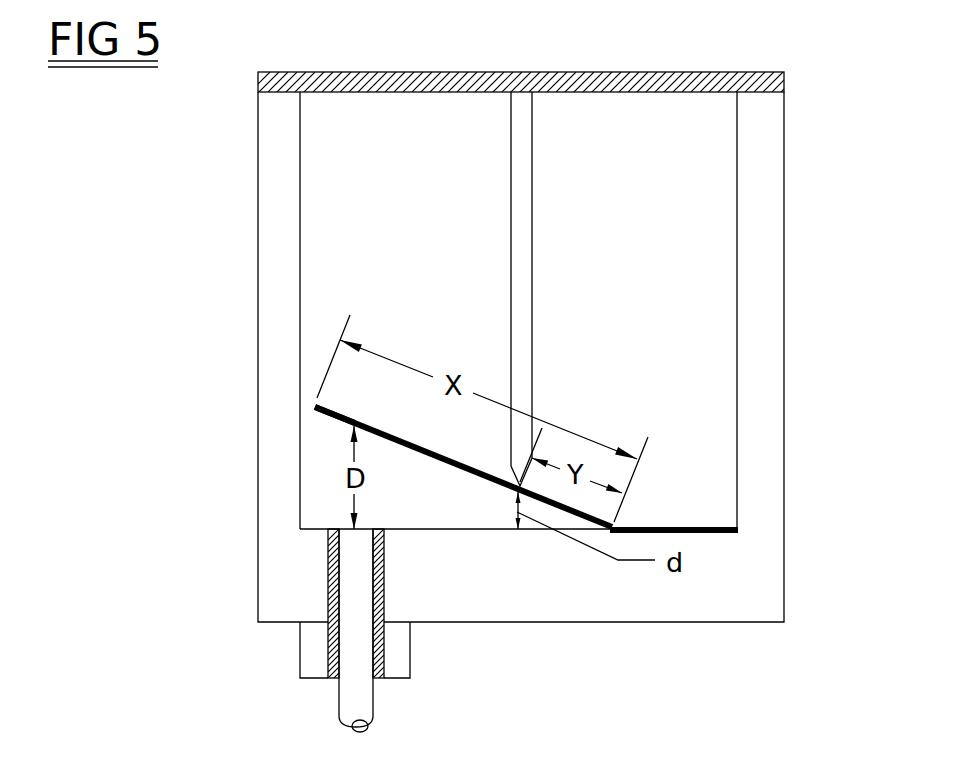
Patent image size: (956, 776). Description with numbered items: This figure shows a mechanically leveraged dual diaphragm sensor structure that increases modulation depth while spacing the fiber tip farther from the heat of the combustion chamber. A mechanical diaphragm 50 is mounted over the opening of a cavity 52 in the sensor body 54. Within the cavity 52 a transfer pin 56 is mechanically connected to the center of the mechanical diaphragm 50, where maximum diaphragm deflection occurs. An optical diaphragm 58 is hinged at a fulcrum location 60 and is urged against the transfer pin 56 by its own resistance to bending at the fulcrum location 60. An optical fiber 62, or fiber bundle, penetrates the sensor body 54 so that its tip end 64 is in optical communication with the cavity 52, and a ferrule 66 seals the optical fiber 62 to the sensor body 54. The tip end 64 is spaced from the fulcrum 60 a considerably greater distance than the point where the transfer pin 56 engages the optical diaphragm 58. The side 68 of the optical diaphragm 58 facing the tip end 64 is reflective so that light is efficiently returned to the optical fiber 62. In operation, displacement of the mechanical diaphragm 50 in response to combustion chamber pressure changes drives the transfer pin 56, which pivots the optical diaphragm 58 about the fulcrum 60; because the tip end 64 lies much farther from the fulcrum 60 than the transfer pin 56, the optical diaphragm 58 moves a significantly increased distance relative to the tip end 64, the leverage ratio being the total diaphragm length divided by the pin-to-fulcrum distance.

The mechanical diaphragm 50 is at (688, 72).
The cavity 52 is at (725, 165).
The sensor body 54 is at (278, 168).
The transfer pin 56 is at (525, 133).
The optical diaphragm 58 is at (353, 420).
The fulcrum location 60 is at (614, 524).
The optical fiber 62 is at (337, 700).
The tip end 64 is at (341, 527).
The ferrule 66 is at (381, 641).
The side of the optical diaphragm 68 is at (353, 421).